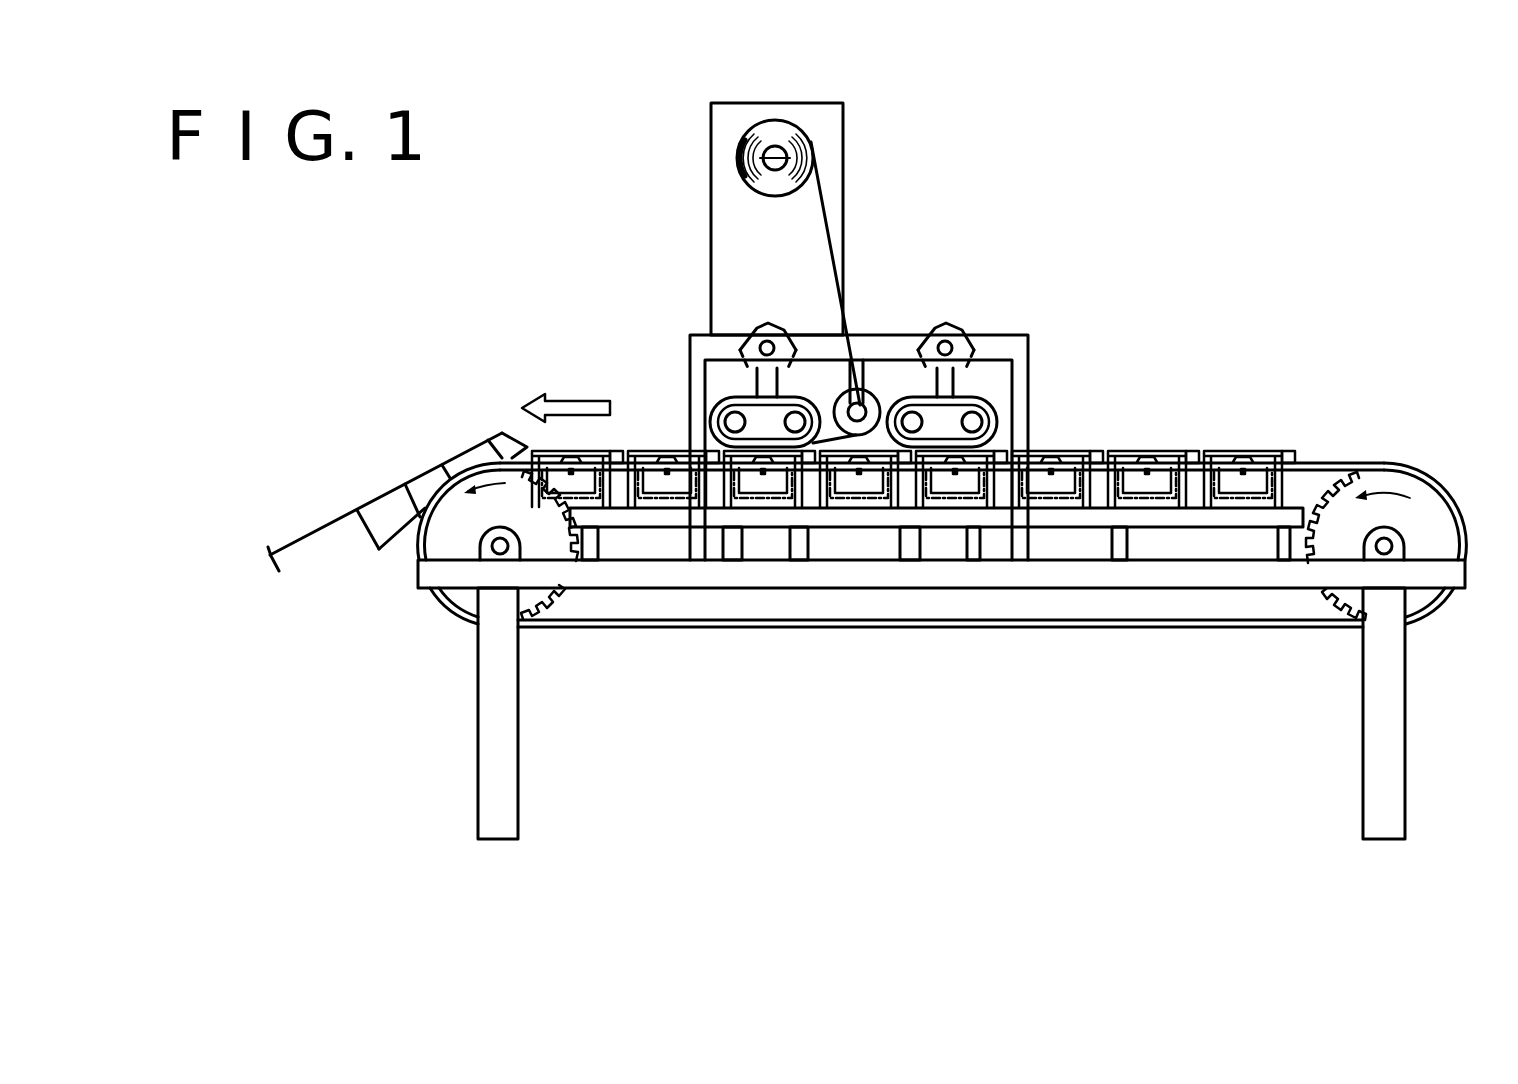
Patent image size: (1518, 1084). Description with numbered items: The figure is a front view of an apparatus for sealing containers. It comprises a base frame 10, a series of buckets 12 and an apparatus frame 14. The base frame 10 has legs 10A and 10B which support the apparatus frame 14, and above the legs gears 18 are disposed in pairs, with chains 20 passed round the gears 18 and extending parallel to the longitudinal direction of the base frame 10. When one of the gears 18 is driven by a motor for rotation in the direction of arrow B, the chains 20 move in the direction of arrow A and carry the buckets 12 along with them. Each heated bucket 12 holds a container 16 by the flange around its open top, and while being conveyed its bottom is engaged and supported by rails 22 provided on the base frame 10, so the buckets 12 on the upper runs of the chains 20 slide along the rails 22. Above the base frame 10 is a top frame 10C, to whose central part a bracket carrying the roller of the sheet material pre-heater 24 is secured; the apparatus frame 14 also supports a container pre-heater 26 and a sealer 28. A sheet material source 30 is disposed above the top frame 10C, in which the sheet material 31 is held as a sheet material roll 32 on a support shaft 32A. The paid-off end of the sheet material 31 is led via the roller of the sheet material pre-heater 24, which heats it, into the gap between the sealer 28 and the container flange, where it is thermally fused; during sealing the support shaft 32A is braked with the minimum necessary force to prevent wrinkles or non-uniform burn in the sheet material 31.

The base frame 10 is at (863, 598).
The leg 10A is at (492, 708).
The leg 10B is at (1392, 752).
The top frame 10C is at (1013, 378).
The bucket 12 is at (633, 493).
The apparatus frame 14 is at (878, 326).
The container 16 is at (358, 527).
The gear 18 is at (452, 535).
The chain 20 is at (1392, 466).
The rail 22 is at (1100, 513).
The sheet material pre-heater 24 is at (877, 402).
The container pre-heater 26 is at (945, 422).
The sealer 28 is at (758, 418).
The sheet material source 30 is at (781, 116).
The sheet material 31 is at (823, 187).
The sheet material roll 32 is at (737, 142).
The support shaft 32A is at (755, 160).
The arrow A is at (566, 396).
The arrow B is at (945, 509).